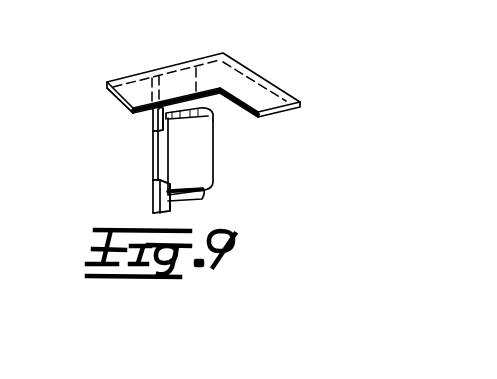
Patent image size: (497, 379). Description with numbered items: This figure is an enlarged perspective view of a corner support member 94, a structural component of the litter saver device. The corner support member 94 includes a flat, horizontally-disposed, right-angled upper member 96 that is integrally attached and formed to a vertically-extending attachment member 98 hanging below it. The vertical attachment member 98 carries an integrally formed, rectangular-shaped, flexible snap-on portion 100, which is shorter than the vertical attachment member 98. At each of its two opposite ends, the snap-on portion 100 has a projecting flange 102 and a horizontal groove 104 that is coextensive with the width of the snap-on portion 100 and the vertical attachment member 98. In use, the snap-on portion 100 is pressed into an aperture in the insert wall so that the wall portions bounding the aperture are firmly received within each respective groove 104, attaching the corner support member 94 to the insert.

The corner support member 94 is at (217, 160).
The upper member 96 is at (137, 74).
The vertical attachment member 98 is at (152, 152).
The snap-on portion 100 is at (200, 160).
The projecting flange 102 is at (205, 117).
The horizontal groove 104 is at (151, 140).